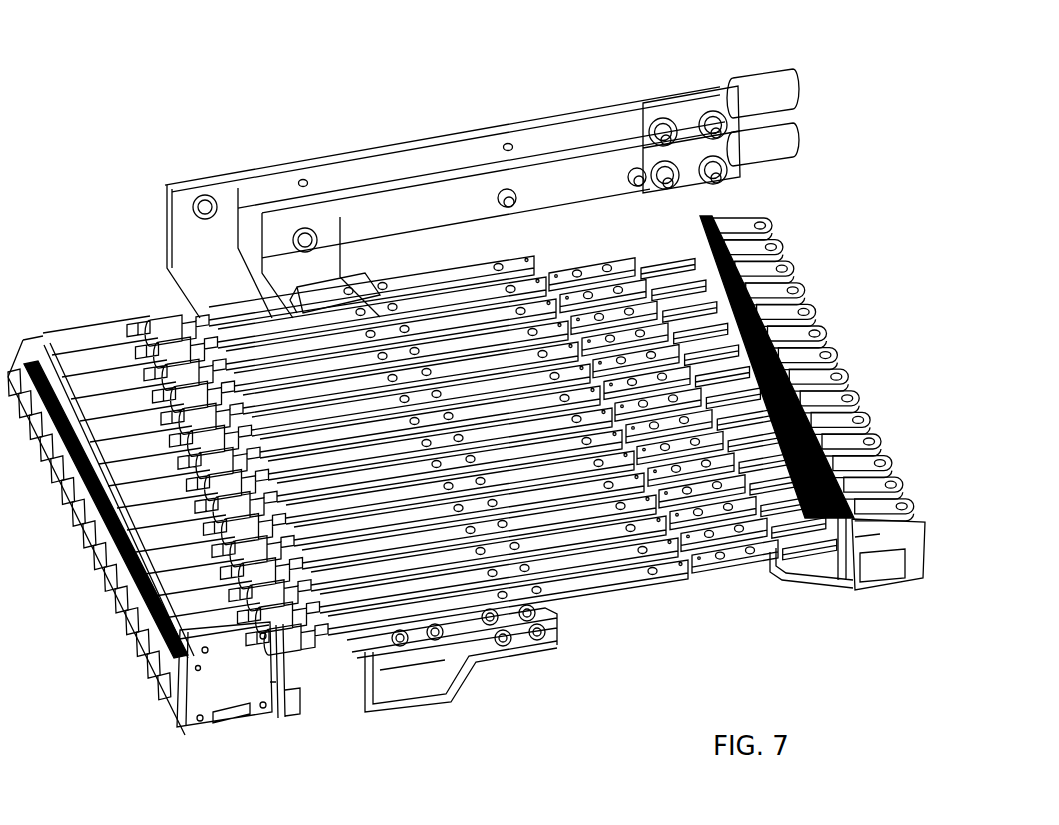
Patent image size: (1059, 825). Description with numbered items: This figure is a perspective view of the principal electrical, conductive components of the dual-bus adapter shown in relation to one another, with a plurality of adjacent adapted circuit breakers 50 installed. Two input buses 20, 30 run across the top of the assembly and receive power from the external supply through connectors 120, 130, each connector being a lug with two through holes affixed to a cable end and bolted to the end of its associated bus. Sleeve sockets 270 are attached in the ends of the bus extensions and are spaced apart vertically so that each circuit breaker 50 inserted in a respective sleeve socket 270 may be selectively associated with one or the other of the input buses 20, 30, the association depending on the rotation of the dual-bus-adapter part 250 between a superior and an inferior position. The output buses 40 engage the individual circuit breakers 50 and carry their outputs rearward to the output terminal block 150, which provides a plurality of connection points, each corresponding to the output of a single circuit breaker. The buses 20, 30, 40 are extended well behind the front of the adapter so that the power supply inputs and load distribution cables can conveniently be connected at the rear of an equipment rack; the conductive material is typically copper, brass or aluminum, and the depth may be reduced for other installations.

The bus 20 is at (480, 157).
The bus 30 is at (455, 200).
The bus 40 is at (600, 570).
The adapted circuit breaker 50 is at (244, 690).
The connector 120 is at (785, 92).
The connector 130 is at (795, 132).
The output terminal block 150 is at (827, 320).
The dual-bus-adapter part 250 is at (285, 716).
The sleeve socket 270 is at (153, 333).